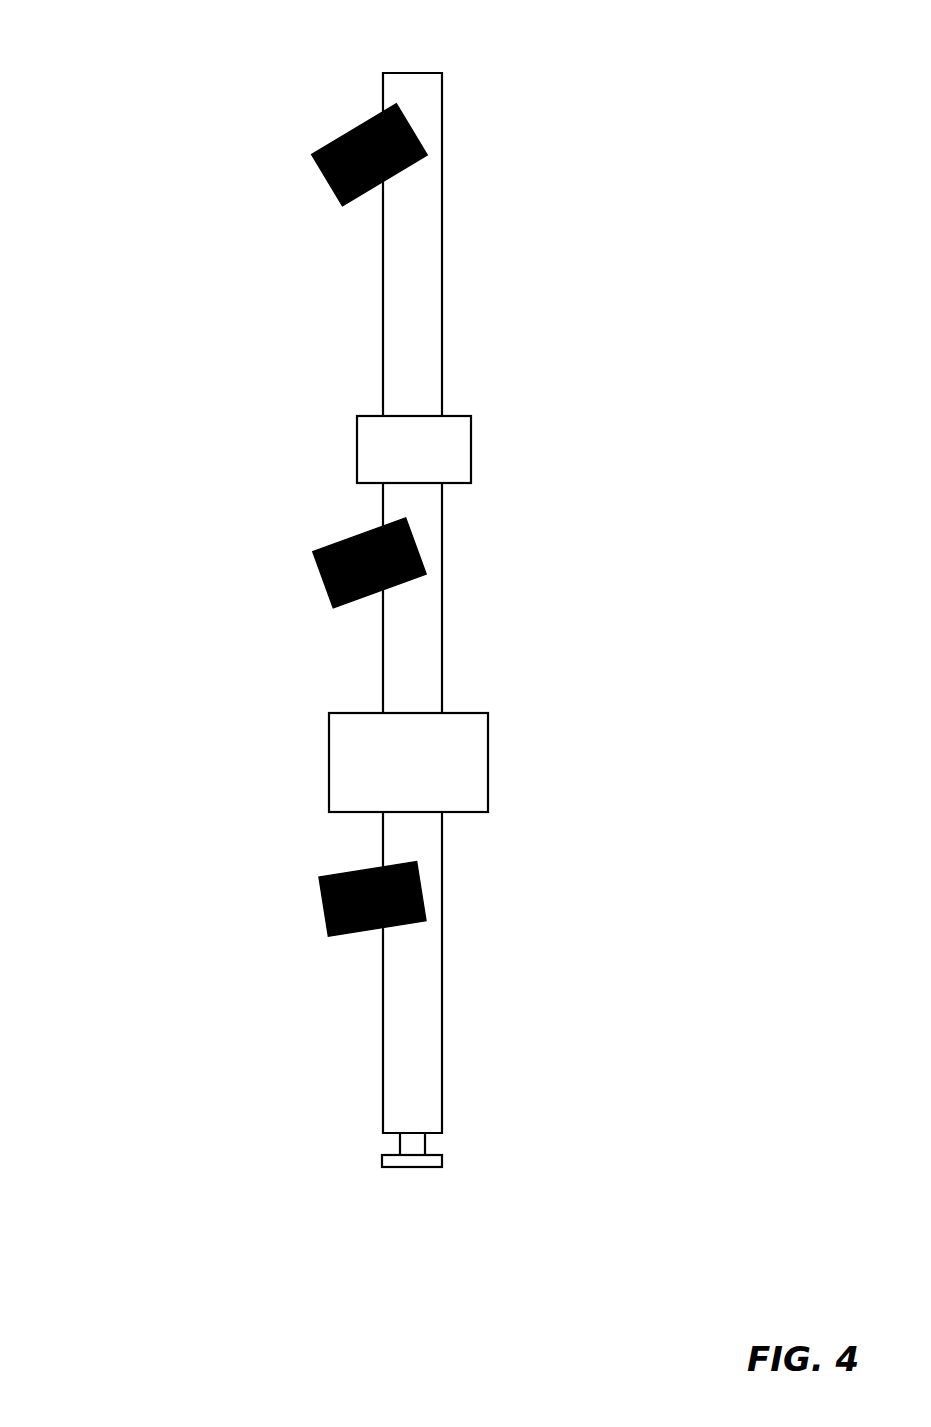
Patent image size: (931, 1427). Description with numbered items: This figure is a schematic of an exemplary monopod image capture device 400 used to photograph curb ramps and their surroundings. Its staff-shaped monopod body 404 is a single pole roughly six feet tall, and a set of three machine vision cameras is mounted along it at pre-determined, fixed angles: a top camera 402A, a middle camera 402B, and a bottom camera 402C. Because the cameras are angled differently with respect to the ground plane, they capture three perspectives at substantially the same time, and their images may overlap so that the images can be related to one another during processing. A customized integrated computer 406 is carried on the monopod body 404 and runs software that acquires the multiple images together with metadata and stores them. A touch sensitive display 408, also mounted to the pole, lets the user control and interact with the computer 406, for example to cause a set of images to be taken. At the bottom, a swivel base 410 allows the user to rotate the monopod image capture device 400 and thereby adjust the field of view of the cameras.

The monopod image capture device 400 is at (130, 52).
The top camera 402A is at (320, 144).
The middle camera 402B is at (324, 545).
The bottom camera 402C is at (328, 873).
The monopod body 404 is at (383, 305).
The integrated computer 406 is at (338, 750).
The touch sensitive display 408 is at (360, 437).
The swivel base 410 is at (359, 1135).